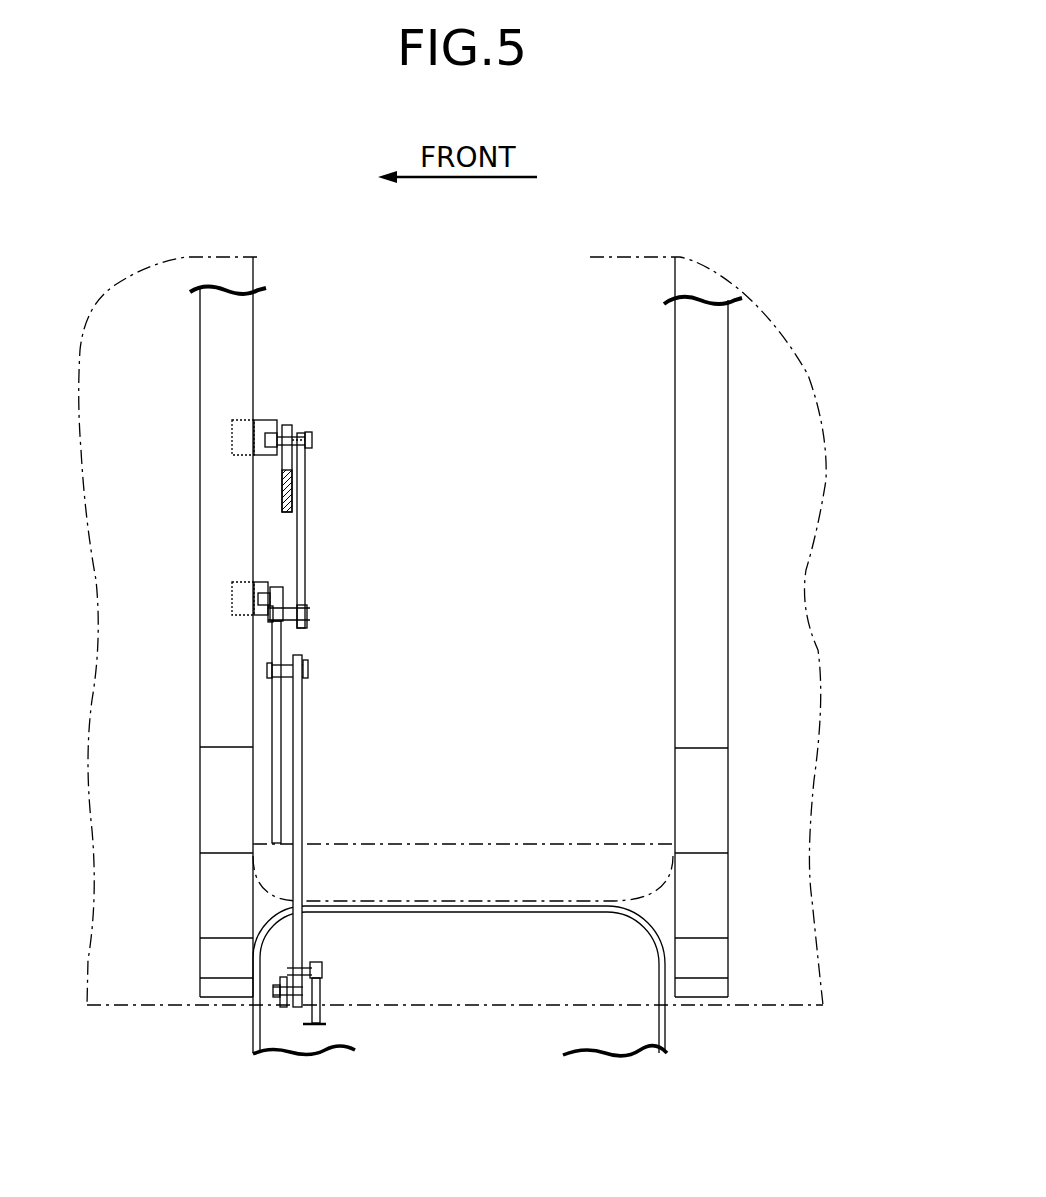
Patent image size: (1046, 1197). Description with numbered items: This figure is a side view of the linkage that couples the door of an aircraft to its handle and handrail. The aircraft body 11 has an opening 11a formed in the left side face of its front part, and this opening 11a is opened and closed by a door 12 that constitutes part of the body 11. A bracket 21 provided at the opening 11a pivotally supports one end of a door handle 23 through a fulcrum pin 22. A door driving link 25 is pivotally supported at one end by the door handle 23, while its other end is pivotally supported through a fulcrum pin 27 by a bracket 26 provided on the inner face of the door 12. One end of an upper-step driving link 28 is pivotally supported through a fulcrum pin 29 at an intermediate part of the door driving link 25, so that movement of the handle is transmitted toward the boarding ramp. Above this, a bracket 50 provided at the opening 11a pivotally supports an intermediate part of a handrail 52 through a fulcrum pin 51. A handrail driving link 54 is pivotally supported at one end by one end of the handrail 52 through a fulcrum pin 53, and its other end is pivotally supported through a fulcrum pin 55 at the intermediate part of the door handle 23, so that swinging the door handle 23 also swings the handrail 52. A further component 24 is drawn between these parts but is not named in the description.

The body 11 is at (132, 1012).
The opening 11a is at (255, 335).
The door 12 is at (667, 1032).
The bracket 21 is at (268, 585).
The fulcrum pin 22 is at (283, 598).
The door handle 23 is at (275, 795).
The bolt 24 is at (308, 670).
The door driving link 25 is at (304, 770).
The bracket 26 is at (283, 1010).
The fulcrum pin 27 is at (280, 991).
The upper-step driving link 28 is at (318, 1012).
The fulcrum pin 29 is at (325, 970).
The bracket 50 is at (268, 418).
The fulcrum pin 51 is at (256, 440).
The handrail 52 is at (283, 497).
The fulcrum pin 53 is at (313, 443).
The handrail driving link 54 is at (306, 520).
The fulcrum pin 55 is at (310, 615).